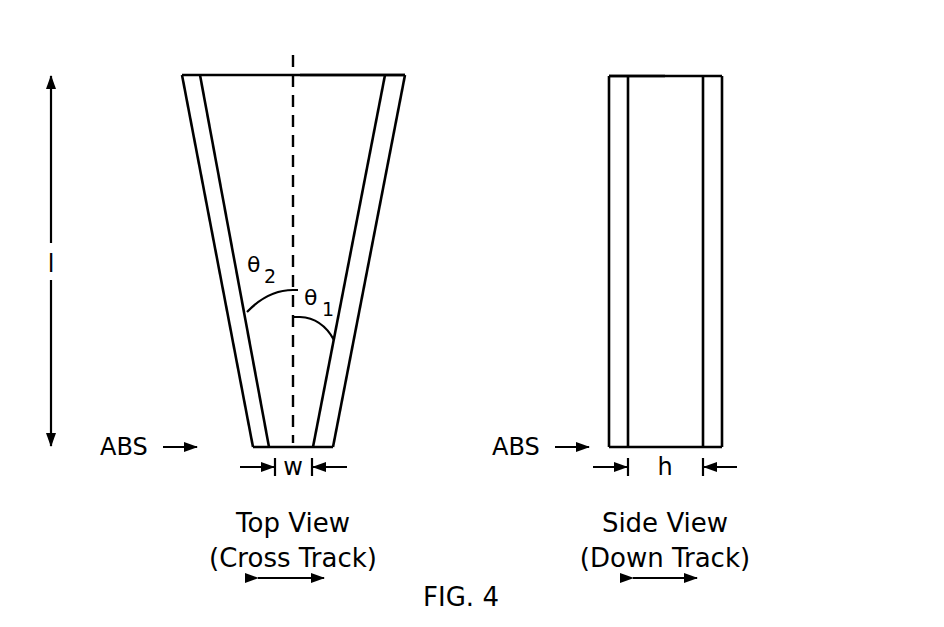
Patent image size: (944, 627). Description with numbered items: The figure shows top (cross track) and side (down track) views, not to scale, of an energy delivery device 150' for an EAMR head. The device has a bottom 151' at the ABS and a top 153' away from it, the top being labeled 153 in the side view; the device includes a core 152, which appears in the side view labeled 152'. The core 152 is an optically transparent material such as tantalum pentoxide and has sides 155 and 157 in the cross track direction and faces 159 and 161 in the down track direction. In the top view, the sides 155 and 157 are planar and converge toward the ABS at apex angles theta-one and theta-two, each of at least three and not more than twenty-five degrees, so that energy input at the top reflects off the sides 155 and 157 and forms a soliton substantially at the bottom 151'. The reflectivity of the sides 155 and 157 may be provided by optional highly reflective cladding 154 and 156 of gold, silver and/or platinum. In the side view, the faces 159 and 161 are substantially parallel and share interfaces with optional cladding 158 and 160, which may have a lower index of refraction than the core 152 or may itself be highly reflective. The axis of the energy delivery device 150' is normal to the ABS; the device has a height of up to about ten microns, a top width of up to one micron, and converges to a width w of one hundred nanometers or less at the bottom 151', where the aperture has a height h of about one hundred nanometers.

The energy delivery device 150' is at (457, 226).
The bottom 151' is at (537, 412).
The core 152 is at (281, 49).
The back edge of pole (side view) 152' is at (686, 50).
The top 153 is at (603, 109).
The top 153' is at (393, 109).
The reflective cladding 154 is at (377, 225).
The side 155 is at (364, 252).
The reflective cladding 156 is at (217, 245).
The side 157 is at (203, 160).
The cladding 158 is at (722, 290).
The face 159 is at (710, 216).
The cladding 160 is at (609, 327).
The face 161 is at (616, 204).